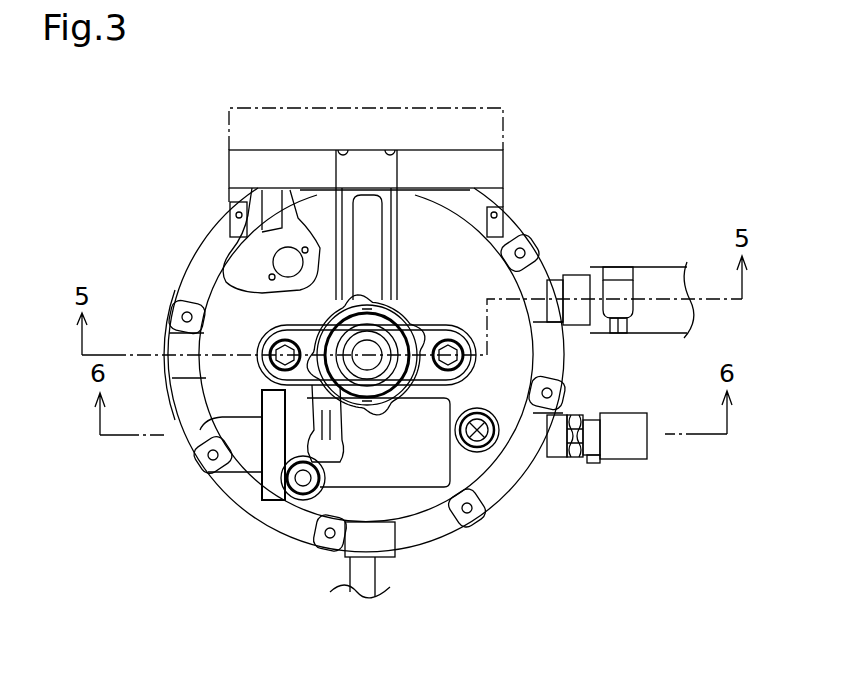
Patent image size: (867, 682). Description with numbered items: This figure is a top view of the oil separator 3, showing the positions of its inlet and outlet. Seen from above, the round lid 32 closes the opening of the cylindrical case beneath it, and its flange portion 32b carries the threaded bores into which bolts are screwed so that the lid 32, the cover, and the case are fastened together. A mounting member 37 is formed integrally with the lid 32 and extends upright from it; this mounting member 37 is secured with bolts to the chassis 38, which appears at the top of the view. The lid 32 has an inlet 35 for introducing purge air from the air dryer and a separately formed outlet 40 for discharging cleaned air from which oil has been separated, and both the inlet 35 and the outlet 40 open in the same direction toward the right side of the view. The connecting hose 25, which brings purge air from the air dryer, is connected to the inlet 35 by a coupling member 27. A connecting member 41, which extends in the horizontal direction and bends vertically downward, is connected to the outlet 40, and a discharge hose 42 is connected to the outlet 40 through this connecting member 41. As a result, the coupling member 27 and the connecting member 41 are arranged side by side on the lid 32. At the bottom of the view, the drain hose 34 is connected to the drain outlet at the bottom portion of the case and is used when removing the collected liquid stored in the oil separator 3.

The oil separator 3 is at (622, 144).
The chassis 38 is at (455, 102).
The mounting member 37 is at (503, 165).
The lid 32 is at (503, 213).
The flange portion 32b is at (204, 240).
The drain hose 34 is at (377, 568).
The inlet 35 is at (556, 275).
The coupling member 27 is at (580, 274).
The connecting hose 25 is at (664, 266).
The connecting member 41 is at (602, 418).
The outlet 40 is at (550, 459).
The discharge hose 42 is at (622, 461).